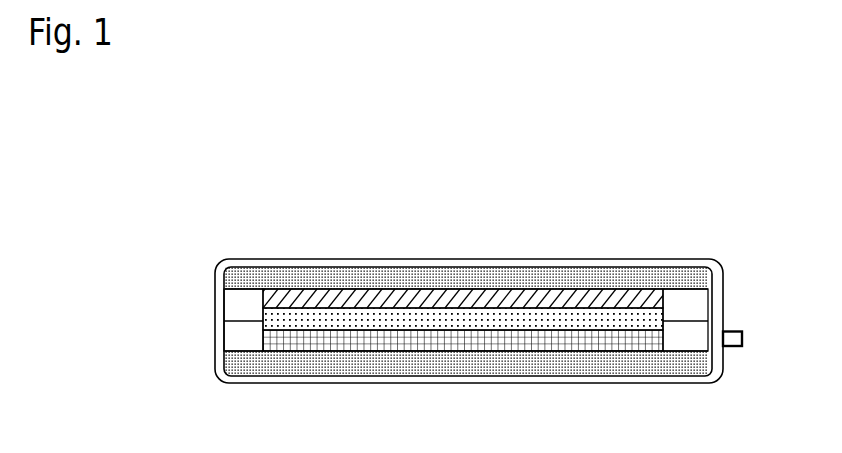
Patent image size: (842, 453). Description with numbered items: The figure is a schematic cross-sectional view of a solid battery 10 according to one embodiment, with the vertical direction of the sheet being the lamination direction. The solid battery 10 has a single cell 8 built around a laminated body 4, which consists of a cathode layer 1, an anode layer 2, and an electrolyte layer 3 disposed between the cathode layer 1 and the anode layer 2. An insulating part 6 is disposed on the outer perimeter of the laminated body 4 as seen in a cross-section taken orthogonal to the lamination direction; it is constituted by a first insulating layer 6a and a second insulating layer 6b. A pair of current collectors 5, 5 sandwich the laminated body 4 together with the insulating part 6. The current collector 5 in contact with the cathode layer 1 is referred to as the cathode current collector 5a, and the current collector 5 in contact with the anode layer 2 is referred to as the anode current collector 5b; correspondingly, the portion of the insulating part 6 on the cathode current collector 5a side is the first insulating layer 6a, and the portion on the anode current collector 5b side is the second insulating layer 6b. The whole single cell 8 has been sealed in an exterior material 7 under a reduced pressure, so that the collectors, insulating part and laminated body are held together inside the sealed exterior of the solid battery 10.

The solid battery 10 is at (465, 76).
The single cell 8 is at (435, 180).
The current collector 5 is at (466, 282).
The cathode current collector 5a is at (605, 283).
The anode current collector 5b is at (457, 363).
The laminated body 4 is at (500, 226).
The cathode layer 1 is at (561, 300).
The anode layer 2 is at (536, 348).
The electrolyte layer 3 is at (513, 327).
The insulating part 6 is at (163, 300).
The first insulating layer 6a is at (237, 308).
The second insulating layer 6b is at (237, 336).
The exterior material 7 is at (718, 290).